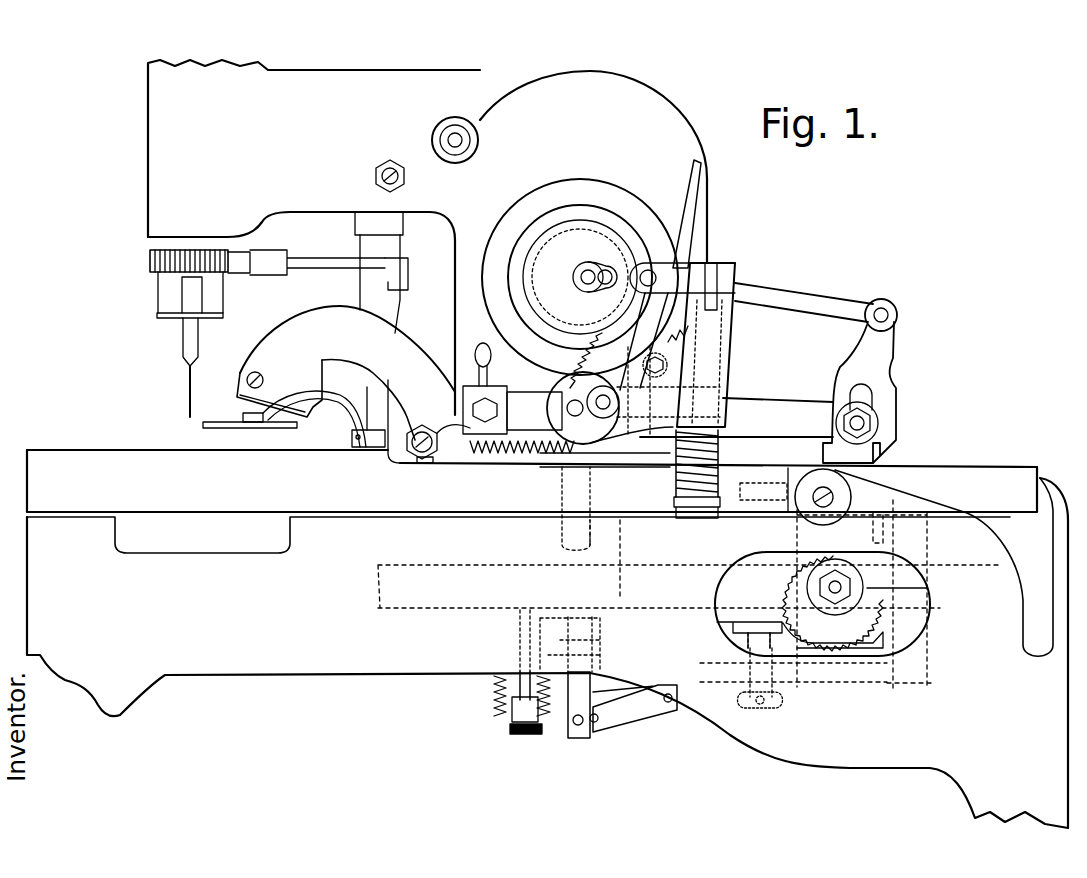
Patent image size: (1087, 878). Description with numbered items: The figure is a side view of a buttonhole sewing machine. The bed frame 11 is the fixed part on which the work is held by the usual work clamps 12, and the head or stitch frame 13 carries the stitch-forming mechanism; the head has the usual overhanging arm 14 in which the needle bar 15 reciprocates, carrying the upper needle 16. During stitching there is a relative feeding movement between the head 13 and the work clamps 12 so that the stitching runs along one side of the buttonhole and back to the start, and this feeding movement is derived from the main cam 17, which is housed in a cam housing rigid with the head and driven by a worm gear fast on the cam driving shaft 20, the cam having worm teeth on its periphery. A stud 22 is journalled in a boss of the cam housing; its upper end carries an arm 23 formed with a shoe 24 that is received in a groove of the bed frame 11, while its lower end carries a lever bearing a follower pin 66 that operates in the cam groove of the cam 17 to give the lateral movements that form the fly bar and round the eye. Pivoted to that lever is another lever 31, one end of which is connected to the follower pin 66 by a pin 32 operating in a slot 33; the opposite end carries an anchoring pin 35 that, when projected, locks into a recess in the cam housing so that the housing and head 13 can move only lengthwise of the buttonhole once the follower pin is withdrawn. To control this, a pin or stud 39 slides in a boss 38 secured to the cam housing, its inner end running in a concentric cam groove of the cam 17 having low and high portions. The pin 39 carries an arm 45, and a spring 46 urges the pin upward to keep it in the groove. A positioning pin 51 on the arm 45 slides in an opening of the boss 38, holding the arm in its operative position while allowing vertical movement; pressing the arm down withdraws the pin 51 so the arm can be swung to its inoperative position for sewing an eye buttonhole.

The bed frame 11 is at (150, 464).
The work clamps 12 is at (234, 428).
The head or stitch frame 13 is at (583, 294).
The overhanging arm 14 is at (314, 237).
The needle bar 15 is at (186, 337).
The upper needle 16 is at (189, 388).
The main cam 17 is at (418, 610).
The cam driving shaft 20 is at (838, 587).
The stud 22 is at (912, 613).
The arm 23 is at (878, 513).
The shoe 24 is at (758, 487).
The lever 31 is at (636, 714).
The pin 32 is at (579, 726).
The slot 33 is at (596, 723).
The anchoring pin 35 is at (765, 640).
The boss 38 is at (513, 658).
The pin or stud 39 is at (520, 688).
The arm 45 is at (530, 714).
The spring 46 is at (500, 683).
The positioning pin 51 is at (533, 705).
The follower pin 66 is at (577, 700).